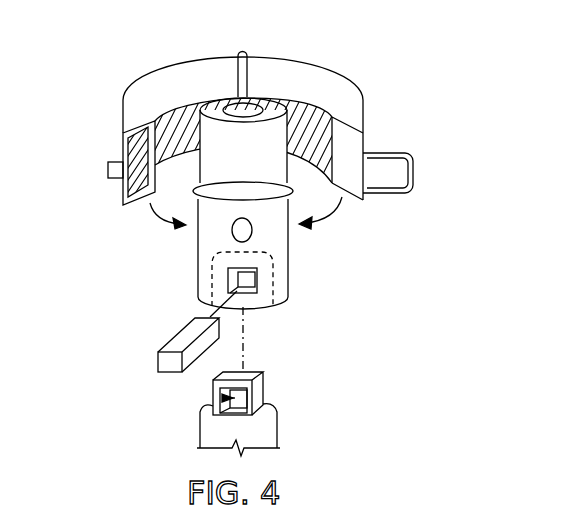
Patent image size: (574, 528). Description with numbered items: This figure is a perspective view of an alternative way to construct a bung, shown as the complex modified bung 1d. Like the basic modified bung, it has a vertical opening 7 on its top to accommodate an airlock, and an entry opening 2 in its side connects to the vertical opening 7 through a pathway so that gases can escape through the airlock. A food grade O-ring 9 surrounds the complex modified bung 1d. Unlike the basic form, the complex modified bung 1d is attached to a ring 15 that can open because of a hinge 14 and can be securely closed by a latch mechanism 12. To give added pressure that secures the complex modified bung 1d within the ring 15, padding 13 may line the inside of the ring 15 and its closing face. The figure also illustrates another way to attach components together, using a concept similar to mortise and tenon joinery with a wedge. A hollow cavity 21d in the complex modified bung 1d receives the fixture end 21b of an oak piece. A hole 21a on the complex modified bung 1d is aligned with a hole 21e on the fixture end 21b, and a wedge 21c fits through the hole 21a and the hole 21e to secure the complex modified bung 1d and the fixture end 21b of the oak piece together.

The complex modified bung 1d is at (198, 262).
The entry opening 2 is at (252, 230).
The vertical opening 7 is at (240, 98).
The food grade O-ring 9 is at (293, 190).
The latch mechanism 12 is at (108, 168).
The padding 13 is at (123, 146).
The hinge 14 is at (243, 53).
The ring 15 is at (284, 63).
The hole 21a is at (257, 280).
The fixture end 21b is at (263, 388).
The wedge 21c is at (158, 362).
The hollow cavity 21d is at (262, 296).
The hole 21e is at (222, 398).